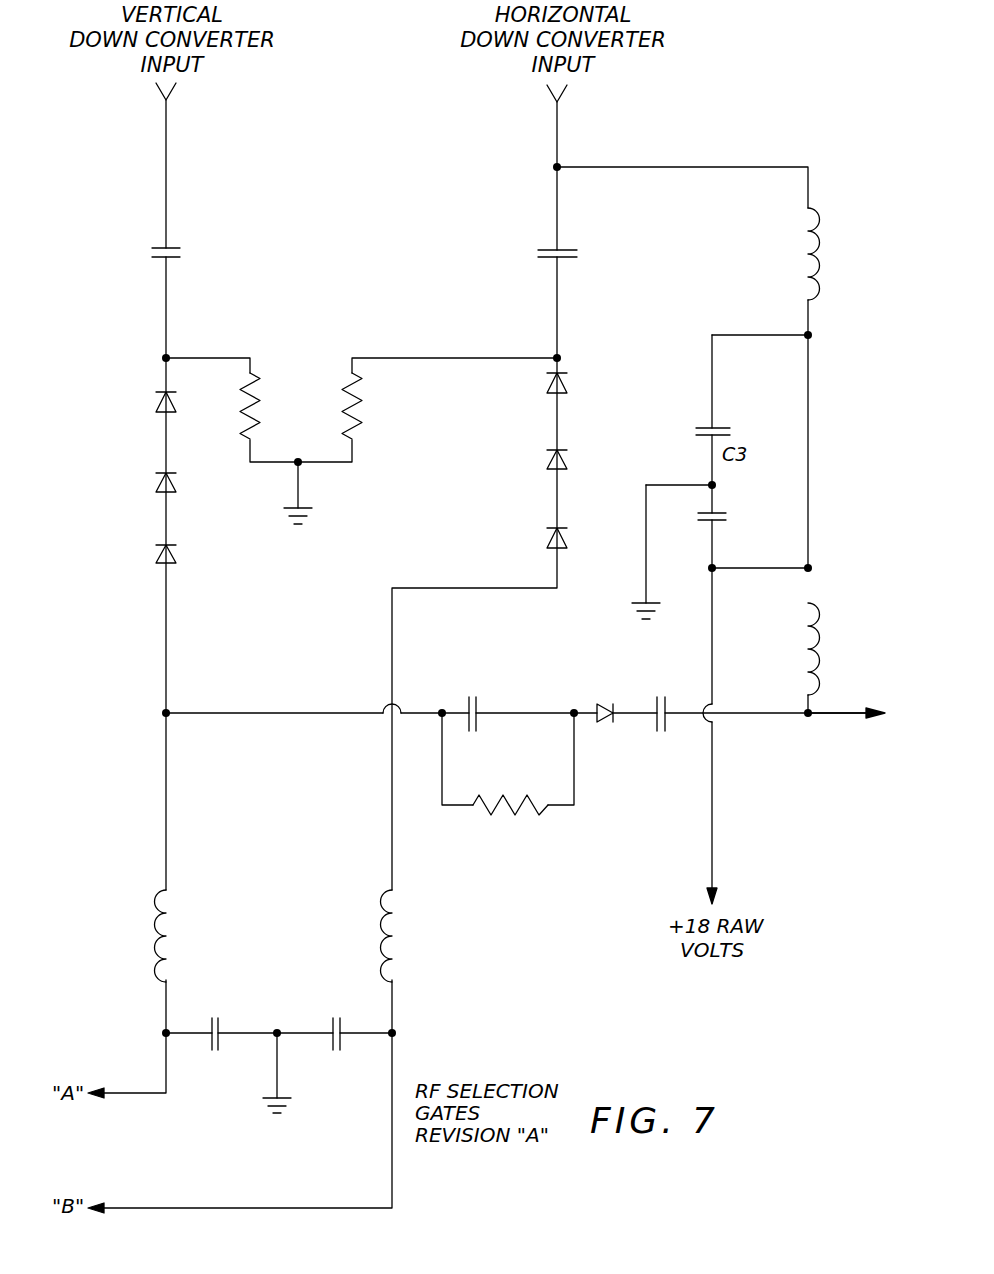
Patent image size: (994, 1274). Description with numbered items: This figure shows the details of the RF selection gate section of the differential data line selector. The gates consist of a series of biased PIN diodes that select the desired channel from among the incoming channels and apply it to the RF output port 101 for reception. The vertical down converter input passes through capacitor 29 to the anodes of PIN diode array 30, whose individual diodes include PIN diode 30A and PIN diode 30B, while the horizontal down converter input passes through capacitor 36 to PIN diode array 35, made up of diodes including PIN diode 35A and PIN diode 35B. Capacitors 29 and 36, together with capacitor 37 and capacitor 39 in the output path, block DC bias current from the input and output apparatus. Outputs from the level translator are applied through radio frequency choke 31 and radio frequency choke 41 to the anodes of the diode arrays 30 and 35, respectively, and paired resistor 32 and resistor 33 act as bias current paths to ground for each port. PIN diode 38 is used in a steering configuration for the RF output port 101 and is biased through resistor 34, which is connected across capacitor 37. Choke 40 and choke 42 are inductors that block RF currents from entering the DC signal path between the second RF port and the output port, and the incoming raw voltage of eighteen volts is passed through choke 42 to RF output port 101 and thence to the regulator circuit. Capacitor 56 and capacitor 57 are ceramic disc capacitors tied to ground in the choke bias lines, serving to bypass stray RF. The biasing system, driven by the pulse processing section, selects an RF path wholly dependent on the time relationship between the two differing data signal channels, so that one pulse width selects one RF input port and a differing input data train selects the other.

The capacitor 29 is at (172, 247).
The PIN diode array 30 is at (173, 410).
The PIN diode 30A is at (175, 486).
The PIN diode 30B is at (176, 558).
The radio frequency choke 31 is at (170, 949).
The resistor 32 is at (262, 415).
The resistor 33 is at (360, 402).
The resistor 34 is at (495, 816).
The PIN diode array 35 is at (547, 386).
The PIN diode 35A is at (547, 461).
The PIN diode 35B is at (547, 541).
The capacitor 36 is at (548, 249).
The capacitor 37 is at (477, 704).
The PIN diode 38 is at (612, 705).
The capacitor 39 is at (665, 704).
The choke 40 is at (821, 229).
The radio frequency choke 41 is at (395, 949).
The choke 42 is at (820, 621).
The capacitor 56 is at (220, 1026).
The capacitor 57 is at (331, 1026).
The RF output port 101 is at (848, 712).